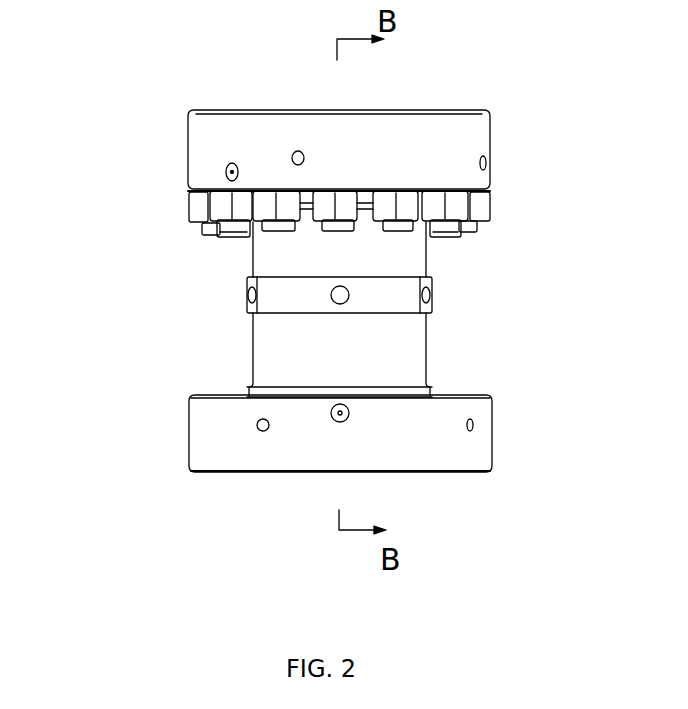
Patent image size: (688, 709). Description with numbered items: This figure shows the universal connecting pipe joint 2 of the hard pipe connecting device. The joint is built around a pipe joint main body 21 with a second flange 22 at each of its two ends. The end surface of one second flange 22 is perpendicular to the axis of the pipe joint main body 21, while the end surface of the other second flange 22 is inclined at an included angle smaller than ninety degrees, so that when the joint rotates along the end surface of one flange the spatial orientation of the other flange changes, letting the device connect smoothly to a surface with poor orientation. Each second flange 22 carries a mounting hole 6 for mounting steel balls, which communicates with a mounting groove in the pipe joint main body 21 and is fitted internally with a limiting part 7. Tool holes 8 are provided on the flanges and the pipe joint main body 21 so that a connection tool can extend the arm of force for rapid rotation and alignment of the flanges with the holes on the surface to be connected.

The universal connecting pipe joint 2 is at (120, 243).
The mounting hole 6 is at (330, 408).
The limiting part 7 is at (224, 171).
The tool hole 8 is at (294, 155).
The pipe joint main body 21 is at (410, 373).
The second flange 22 is at (487, 181).